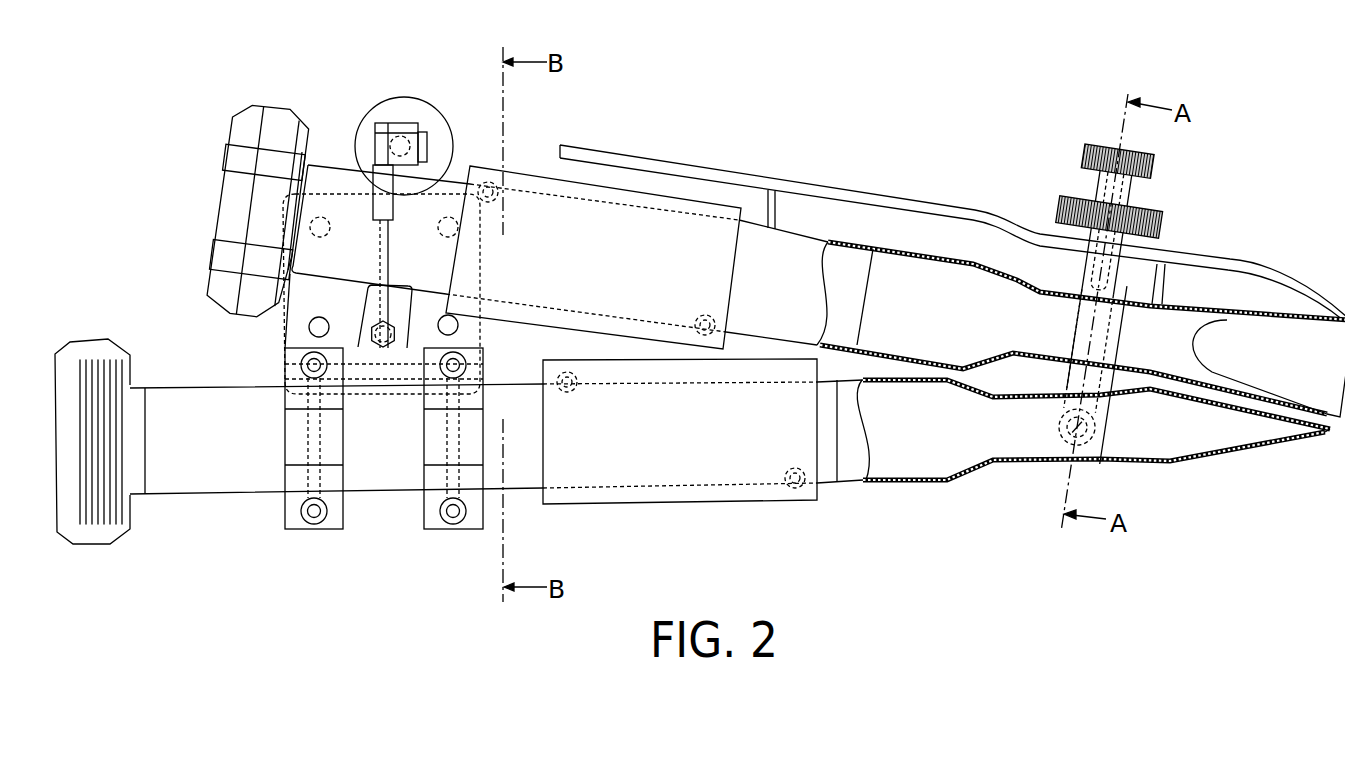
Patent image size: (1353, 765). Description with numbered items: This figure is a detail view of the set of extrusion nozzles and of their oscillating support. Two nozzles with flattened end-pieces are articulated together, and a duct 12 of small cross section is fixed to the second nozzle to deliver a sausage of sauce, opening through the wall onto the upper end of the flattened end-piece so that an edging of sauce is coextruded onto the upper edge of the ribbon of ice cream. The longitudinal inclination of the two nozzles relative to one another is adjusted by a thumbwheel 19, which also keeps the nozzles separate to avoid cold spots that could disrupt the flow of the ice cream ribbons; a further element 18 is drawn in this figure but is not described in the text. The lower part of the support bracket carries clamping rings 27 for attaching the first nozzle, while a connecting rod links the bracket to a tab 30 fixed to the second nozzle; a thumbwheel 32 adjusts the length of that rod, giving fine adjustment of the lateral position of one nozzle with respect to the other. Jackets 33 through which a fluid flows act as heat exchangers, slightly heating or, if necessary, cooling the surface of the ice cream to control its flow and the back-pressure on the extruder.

The duct 12 is at (912, 198).
The nut 18 is at (370, 320).
The thumbwheel 19 is at (1133, 193).
The clamping rings 27 is at (316, 528).
The tab 30 is at (373, 128).
The thumbwheel 32 is at (407, 108).
The jackets 33 is at (535, 213).